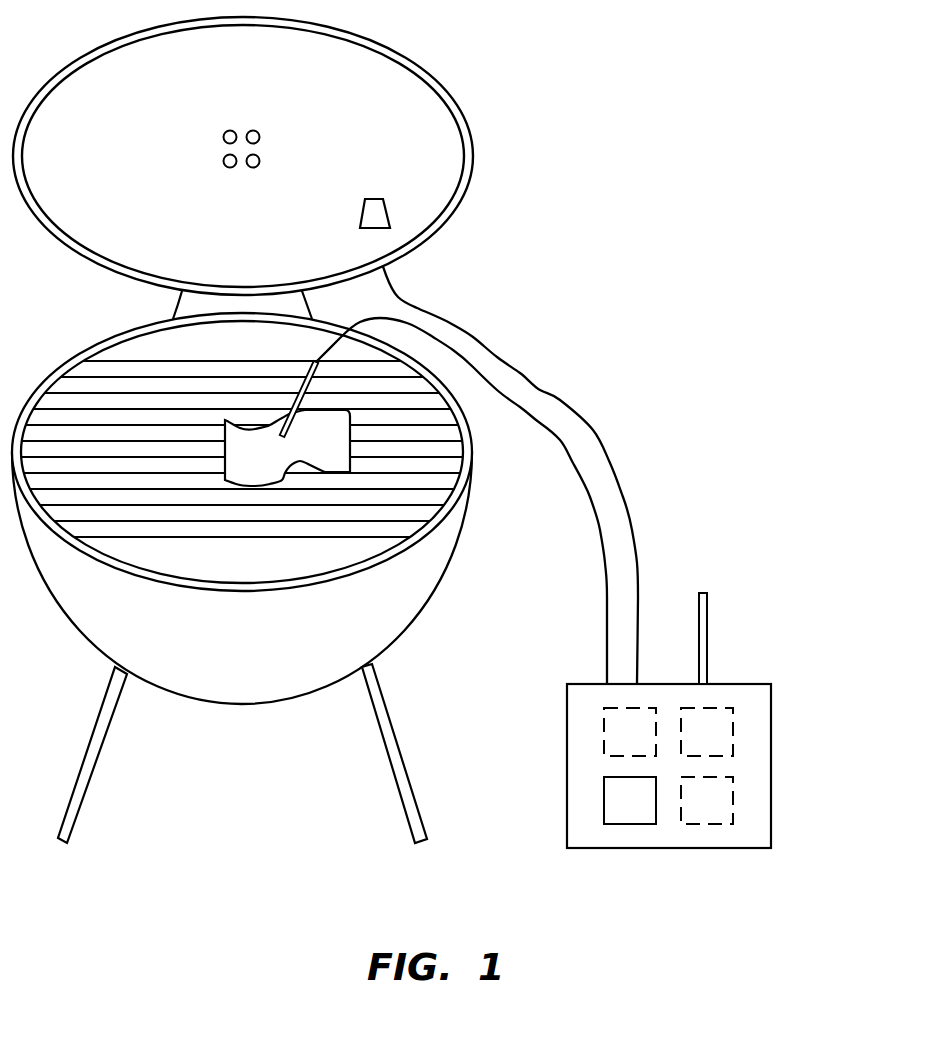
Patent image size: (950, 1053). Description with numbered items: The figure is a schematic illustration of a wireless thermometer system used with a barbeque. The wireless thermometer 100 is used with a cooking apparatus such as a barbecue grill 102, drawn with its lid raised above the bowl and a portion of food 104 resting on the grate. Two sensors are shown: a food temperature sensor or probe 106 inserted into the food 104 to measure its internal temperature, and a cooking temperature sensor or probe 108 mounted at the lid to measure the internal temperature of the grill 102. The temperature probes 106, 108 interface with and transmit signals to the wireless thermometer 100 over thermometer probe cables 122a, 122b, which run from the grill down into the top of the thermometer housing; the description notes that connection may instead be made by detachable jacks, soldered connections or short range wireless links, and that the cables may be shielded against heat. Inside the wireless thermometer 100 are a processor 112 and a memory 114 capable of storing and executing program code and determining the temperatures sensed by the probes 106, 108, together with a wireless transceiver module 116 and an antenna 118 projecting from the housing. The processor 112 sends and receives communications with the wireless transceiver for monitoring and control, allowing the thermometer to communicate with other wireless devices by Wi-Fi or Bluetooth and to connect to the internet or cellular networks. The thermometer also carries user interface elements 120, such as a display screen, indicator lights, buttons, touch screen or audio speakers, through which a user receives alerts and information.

The wireless thermometer 100 is at (705, 848).
The barbecue grill 102 is at (472, 145).
The portion of food 104 is at (278, 462).
The food temperature sensor or probe 106 is at (298, 387).
The cooking temperature sensor or probe 108 is at (373, 196).
The processor 112 is at (604, 732).
The memory 114 is at (733, 730).
The wireless transceiver module 116 is at (733, 797).
The antenna 118 is at (707, 618).
The user interface elements 120 is at (604, 796).
The thermometer probe cable 122a is at (606, 620).
The thermometer probe cable 122b is at (637, 568).